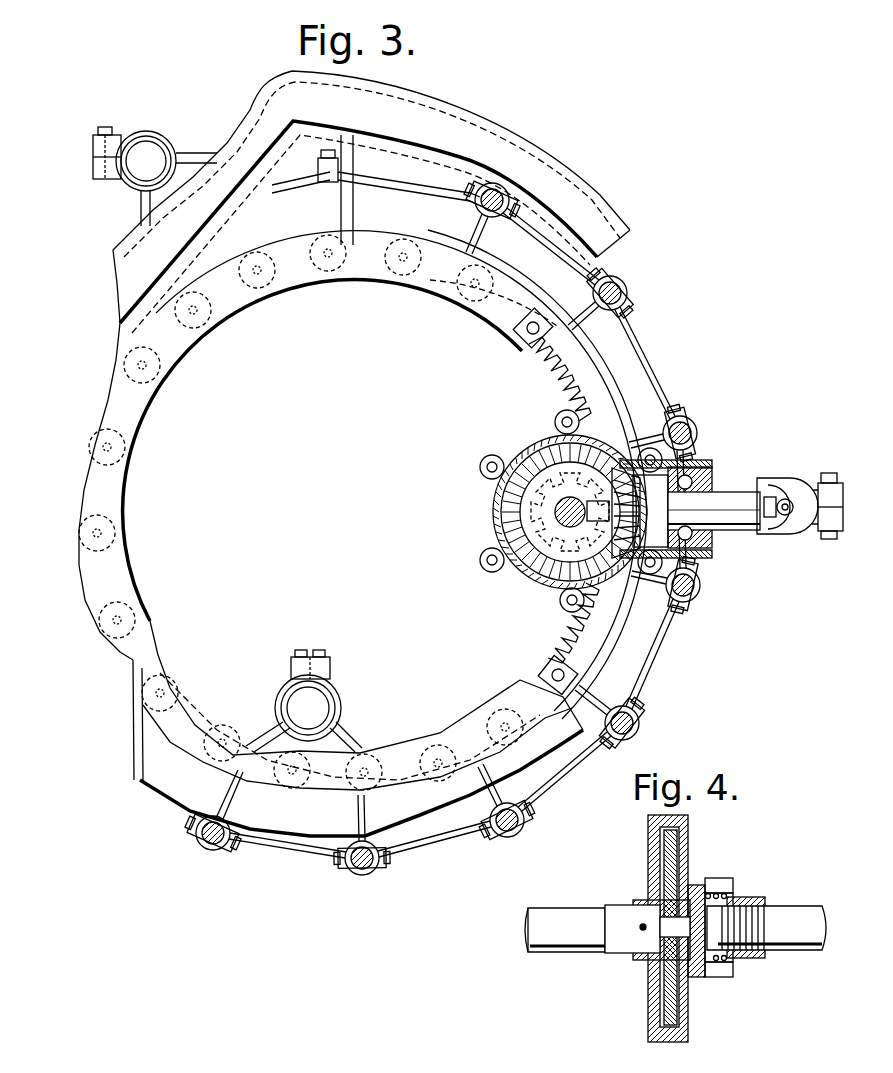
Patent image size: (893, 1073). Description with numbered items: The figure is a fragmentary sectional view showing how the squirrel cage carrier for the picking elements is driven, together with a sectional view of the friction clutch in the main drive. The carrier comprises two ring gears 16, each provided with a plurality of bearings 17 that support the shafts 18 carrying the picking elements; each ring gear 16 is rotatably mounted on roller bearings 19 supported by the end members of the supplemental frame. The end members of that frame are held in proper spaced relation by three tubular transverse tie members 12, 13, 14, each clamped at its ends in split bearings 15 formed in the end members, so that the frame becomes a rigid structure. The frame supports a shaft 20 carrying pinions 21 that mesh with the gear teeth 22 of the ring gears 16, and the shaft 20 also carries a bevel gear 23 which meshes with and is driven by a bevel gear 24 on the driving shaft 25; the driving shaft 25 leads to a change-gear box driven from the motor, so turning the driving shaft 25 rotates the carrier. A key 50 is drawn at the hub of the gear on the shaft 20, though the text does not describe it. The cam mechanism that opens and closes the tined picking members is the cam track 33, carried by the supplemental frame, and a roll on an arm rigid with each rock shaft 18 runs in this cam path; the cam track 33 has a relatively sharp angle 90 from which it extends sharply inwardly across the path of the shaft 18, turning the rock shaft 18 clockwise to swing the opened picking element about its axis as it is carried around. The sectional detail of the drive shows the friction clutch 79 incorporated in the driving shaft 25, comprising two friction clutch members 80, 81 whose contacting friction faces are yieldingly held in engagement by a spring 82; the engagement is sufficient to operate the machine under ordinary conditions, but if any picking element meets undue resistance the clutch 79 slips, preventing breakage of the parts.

In FIG. 3, the transverse member 12 is at (800, 480).
In FIG. 3, the transverse member 13 is at (148, 133).
In FIG. 3, the transverse member 14 is at (340, 698).
In FIG. 3, the split bearing 15 is at (130, 128).
In FIG. 3, the ring gear 16 is at (560, 378).
In FIG. 3, the bearing 17 is at (497, 192).
In FIG. 3, the shaft 18 is at (610, 302).
In FIG. 3, the roller bearing 19 is at (203, 323).
In FIG. 3, the shaft 20 is at (555, 513).
In FIG. 3, the pinion 21 is at (507, 493).
In FIG. 3, the gear teeth 22 is at (563, 393).
In FIG. 3, the bevel gear 23 is at (545, 520).
In FIG. 3, the bevel gear 24 is at (630, 553).
In FIG. 3, the driving shaft 25 is at (717, 503).
In FIG. 3, the cam track 33 is at (418, 100).
In FIG. 3, the key 50 is at (587, 533).
In FIG. 3, the sharp angle 90 is at (274, 90).
In FIG. 4, the friction clutch 79 is at (662, 1025).
In FIG. 4, the friction clutch member 80 is at (675, 1013).
In FIG. 4, the friction clutch member 81 is at (683, 995).
In FIG. 4, the spring 82 is at (730, 862).